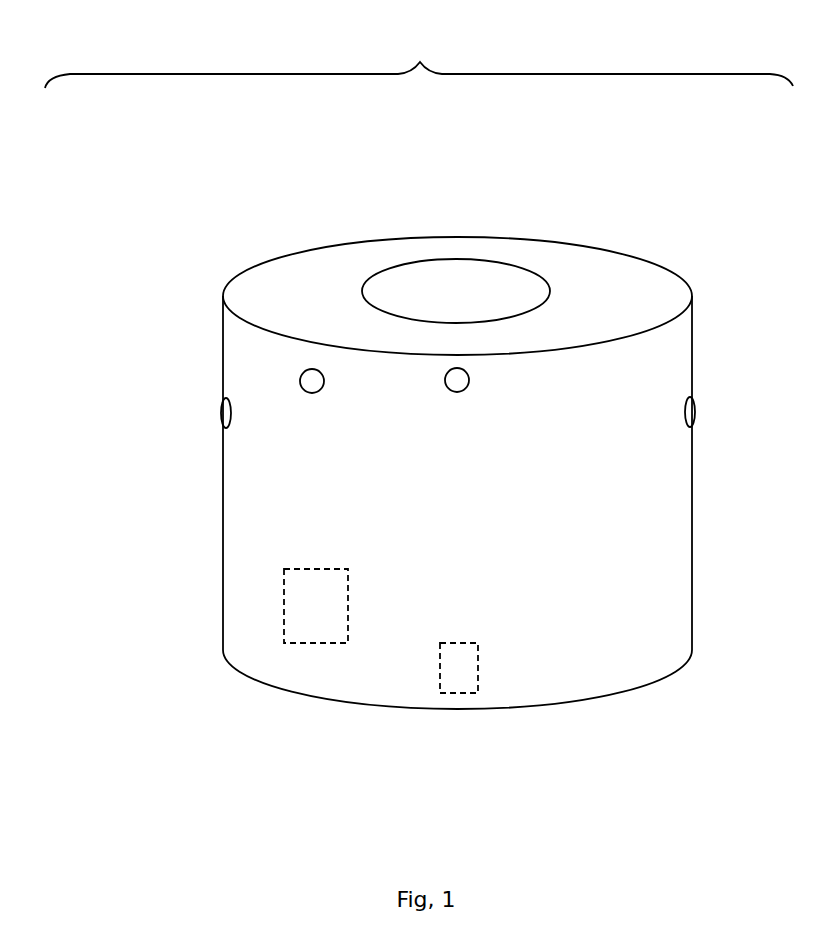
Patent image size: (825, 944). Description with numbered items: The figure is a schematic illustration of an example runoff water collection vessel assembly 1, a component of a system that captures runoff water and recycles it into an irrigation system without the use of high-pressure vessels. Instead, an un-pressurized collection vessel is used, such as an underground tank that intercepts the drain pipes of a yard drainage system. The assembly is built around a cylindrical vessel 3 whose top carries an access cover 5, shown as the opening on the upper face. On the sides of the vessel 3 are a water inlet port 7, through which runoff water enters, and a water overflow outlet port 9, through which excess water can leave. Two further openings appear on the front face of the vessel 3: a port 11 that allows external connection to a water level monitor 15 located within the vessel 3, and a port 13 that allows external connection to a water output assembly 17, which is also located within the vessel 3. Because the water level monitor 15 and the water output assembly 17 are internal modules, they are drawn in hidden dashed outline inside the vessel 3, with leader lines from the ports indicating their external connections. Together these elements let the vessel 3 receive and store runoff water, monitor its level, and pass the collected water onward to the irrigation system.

The runoff water collection vessel assembly 1 is at (419, 49).
The vessel 3 is at (358, 228).
The access cover 5 is at (483, 277).
The water inlet port 7 is at (706, 403).
The water overflow outlet port 9 is at (210, 405).
The port 11 is at (298, 403).
The port 13 is at (433, 403).
The water level monitor 15 is at (297, 632).
The water output assembly 17 is at (458, 680).